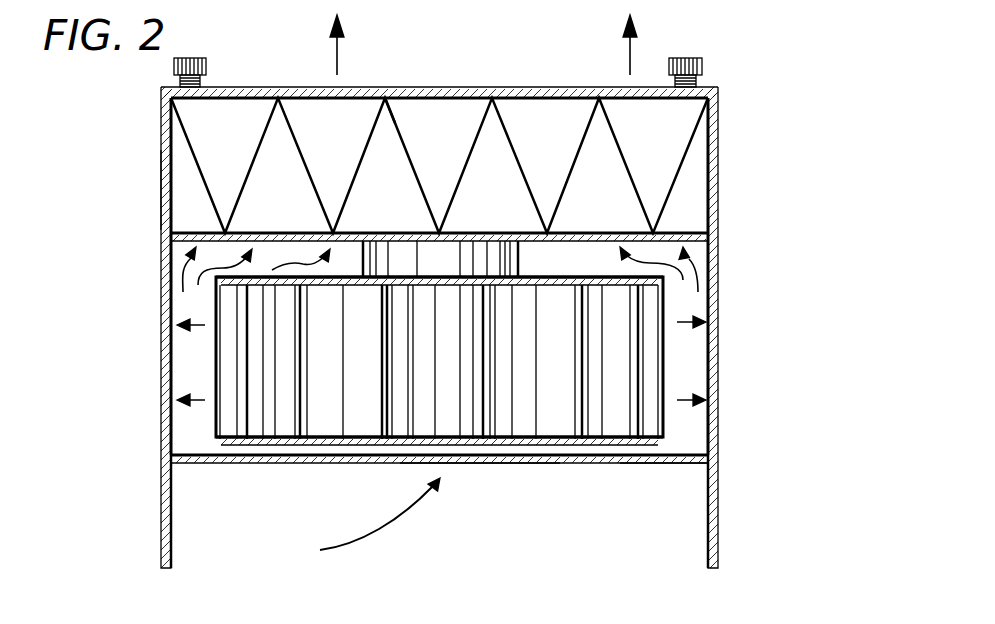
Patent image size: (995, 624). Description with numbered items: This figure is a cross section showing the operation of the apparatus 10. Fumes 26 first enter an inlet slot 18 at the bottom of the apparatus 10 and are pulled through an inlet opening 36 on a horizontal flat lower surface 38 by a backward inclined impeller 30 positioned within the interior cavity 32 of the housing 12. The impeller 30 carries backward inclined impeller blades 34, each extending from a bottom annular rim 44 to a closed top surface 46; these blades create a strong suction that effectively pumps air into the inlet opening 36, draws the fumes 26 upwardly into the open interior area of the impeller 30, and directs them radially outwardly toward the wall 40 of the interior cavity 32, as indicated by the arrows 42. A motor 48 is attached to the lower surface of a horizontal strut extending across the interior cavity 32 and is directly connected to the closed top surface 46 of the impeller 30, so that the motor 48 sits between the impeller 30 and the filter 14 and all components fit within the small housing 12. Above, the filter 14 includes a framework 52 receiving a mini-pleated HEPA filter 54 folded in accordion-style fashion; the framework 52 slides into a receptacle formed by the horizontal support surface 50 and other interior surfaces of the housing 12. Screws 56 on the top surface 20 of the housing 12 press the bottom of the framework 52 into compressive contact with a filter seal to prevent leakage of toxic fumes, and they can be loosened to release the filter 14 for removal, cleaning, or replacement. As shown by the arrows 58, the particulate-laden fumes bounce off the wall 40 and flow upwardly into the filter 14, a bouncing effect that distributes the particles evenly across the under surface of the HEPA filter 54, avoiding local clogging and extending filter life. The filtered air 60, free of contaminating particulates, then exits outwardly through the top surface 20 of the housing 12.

The apparatus 10 is at (755, 170).
The housing 12 is at (715, 275).
The filter 14 is at (698, 145).
The inlet slot 18 is at (692, 508).
The top surface 20 is at (327, 87).
The fumes 26 is at (390, 533).
The backward inclined impeller 30 is at (652, 387).
The interior cavity 32 is at (695, 420).
The backward inclined impeller blades 34 is at (275, 427).
The inlet opening 36 is at (470, 465).
The horizontal flat lower surface 38 is at (677, 463).
The wall 40 is at (168, 380).
The arrows 42 is at (177, 407).
The bottom annular rim 44 is at (635, 443).
The closed top surface 46 is at (525, 282).
The motor 48 is at (420, 250).
The horizontal support surface 50 is at (717, 240).
The framework 52 is at (162, 200).
The HEPA filter 54 is at (395, 123).
The screws 56 is at (205, 57).
The arrows 58 is at (170, 262).
The filtered air 60 is at (340, 52).